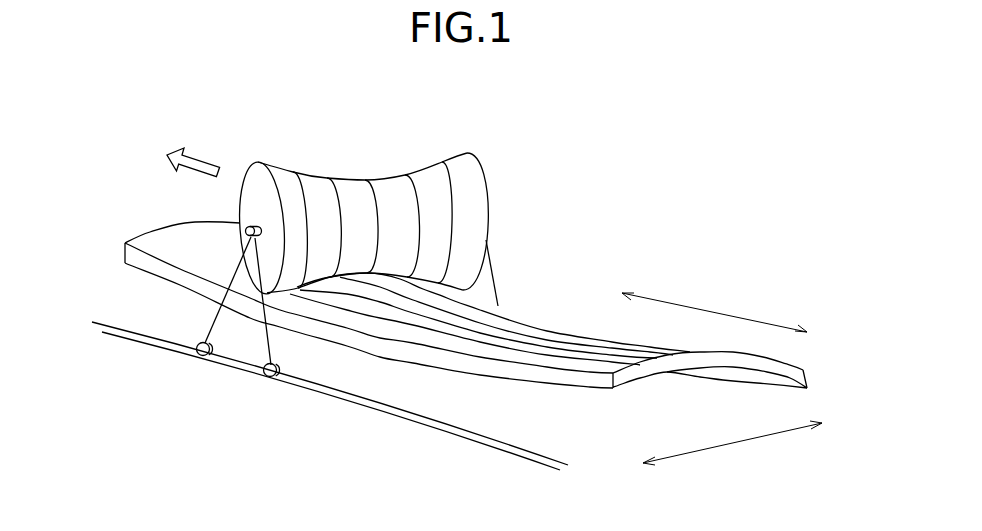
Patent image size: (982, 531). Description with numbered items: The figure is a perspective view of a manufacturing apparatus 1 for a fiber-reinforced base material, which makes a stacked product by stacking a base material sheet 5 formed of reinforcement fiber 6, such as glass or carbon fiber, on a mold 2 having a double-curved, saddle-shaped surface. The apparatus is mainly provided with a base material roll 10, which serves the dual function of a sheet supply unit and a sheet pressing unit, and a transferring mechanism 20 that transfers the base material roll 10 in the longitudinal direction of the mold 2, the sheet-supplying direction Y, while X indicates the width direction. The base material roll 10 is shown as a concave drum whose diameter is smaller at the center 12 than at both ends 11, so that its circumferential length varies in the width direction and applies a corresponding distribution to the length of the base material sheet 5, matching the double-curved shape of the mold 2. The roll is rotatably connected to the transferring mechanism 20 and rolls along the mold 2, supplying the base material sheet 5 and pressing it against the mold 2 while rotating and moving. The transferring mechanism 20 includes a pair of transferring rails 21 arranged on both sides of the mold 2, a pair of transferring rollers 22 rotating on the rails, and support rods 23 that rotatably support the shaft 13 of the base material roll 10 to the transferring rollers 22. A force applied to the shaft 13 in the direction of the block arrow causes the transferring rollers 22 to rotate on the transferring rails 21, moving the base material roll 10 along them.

The manufacturing apparatus 1 is at (578, 212).
The mold 2 is at (150, 230).
The base material sheet 5 is at (525, 323).
The reinforcement fiber 6 is at (457, 216).
The base material roll 10 is at (412, 168).
The ends 11 is at (258, 162).
The center 12 is at (357, 178).
The shaft 13 is at (246, 229).
The transferring mechanism 20 is at (288, 397).
The transferring rails 21 is at (361, 412).
The transferring rollers 22 is at (199, 357).
The support rods 23 is at (208, 325).